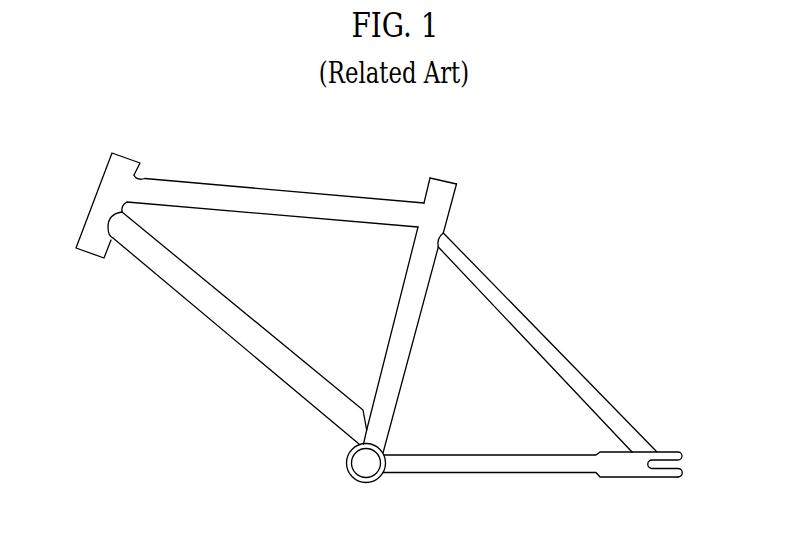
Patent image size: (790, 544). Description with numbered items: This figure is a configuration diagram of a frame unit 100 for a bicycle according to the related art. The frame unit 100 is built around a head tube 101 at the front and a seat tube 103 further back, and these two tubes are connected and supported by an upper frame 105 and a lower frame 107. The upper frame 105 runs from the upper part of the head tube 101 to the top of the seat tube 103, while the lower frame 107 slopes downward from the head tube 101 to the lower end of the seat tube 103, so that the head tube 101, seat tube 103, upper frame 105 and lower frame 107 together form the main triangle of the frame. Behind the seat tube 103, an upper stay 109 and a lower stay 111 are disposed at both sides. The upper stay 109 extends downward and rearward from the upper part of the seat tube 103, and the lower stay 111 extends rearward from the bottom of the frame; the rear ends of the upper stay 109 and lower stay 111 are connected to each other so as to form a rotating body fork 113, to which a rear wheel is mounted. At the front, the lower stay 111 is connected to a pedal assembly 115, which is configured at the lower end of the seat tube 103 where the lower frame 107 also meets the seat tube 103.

The frame unit 100 is at (555, 195).
The head tube 101 is at (102, 197).
The seat tube 103 is at (442, 182).
The upper frame 105 is at (249, 192).
The lower frame 107 is at (250, 343).
The upper stay 109 is at (555, 355).
The lower stay 111 is at (488, 471).
The rotating body fork 113 is at (664, 452).
The pedal assembly 115 is at (350, 478).